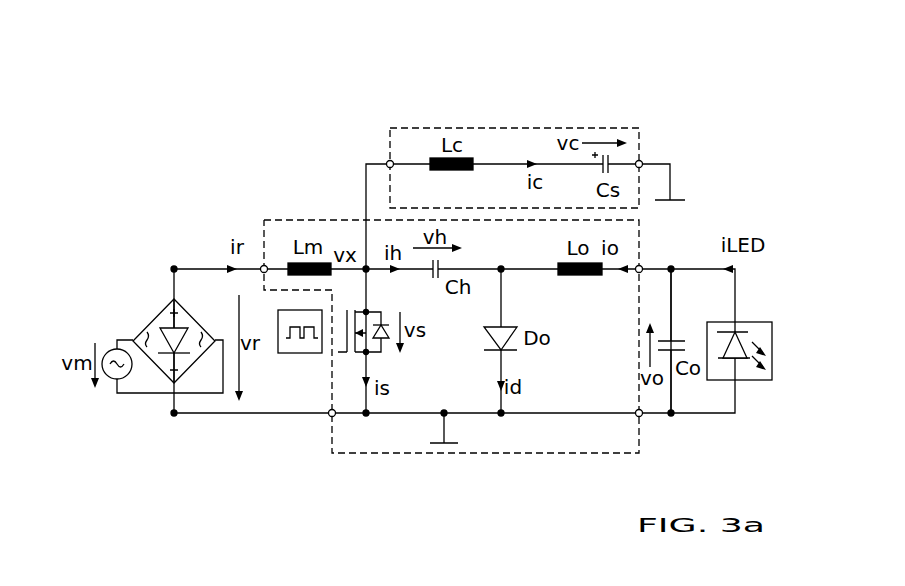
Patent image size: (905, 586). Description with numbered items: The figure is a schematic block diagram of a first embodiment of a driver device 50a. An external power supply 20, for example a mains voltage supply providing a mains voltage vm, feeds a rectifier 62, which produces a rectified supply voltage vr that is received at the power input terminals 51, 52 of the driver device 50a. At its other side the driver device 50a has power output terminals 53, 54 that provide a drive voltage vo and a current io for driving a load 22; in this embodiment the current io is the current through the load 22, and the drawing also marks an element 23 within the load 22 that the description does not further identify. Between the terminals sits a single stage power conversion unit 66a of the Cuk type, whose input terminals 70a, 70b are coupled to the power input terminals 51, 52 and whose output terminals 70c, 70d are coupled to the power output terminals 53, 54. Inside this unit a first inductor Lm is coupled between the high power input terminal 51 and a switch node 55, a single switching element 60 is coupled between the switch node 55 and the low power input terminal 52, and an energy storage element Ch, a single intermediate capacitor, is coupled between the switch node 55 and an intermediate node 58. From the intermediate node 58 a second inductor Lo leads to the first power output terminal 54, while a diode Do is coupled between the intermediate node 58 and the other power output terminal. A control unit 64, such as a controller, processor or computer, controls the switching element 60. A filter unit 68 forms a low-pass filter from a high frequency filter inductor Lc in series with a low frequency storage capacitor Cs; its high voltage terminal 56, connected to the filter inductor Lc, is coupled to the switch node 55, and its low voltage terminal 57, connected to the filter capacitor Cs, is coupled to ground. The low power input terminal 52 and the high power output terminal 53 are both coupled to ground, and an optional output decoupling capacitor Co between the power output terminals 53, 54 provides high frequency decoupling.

The driver device 50a is at (712, 78).
The high power input terminal 51 is at (174, 269).
The low power input terminal 52 is at (174, 413).
The high power output terminal 53 is at (672, 414).
The first power output terminal 54 is at (672, 268).
The switch node 55 is at (367, 270).
The high voltage terminal 56 is at (390, 160).
The low voltage terminal 57 is at (641, 162).
The intermediate node 58 is at (502, 270).
The switching element 60 is at (388, 358).
The rectifier 62 is at (147, 324).
The control unit 64 is at (281, 356).
The single stage power conversion unit 66a is at (308, 220).
The filter unit 68 is at (563, 128).
The input terminal 70a is at (266, 238).
The input terminal 70b is at (332, 413).
The output terminal 70c is at (640, 268).
The output terminal 70d is at (640, 414).
The external power supply 20 is at (108, 352).
The load 22 is at (746, 322).
The LED 23 is at (740, 365).